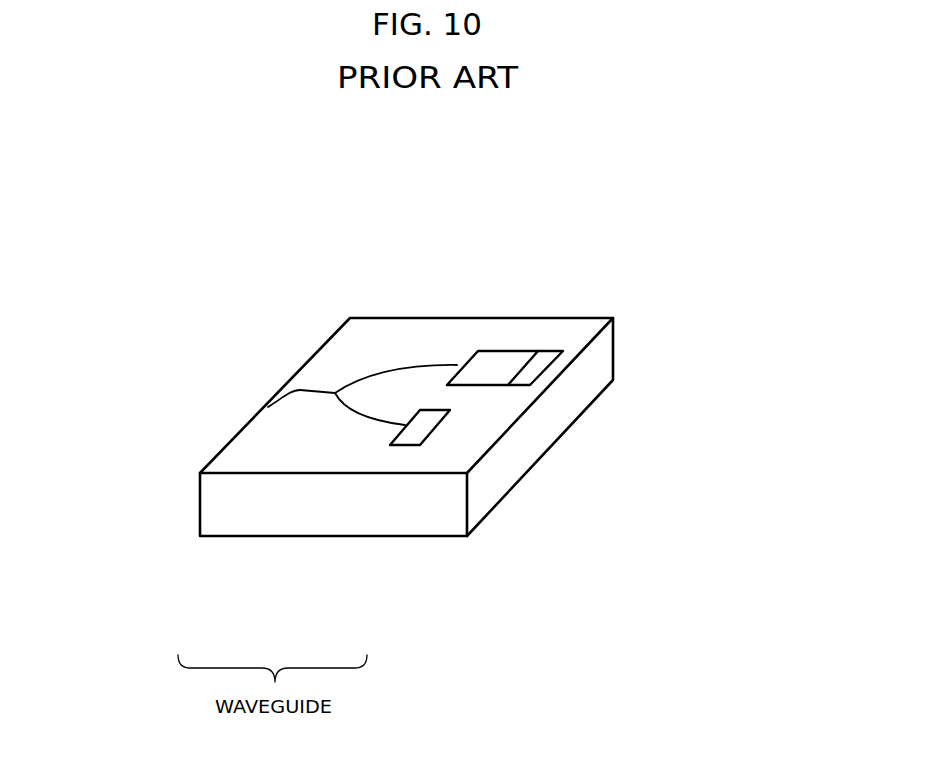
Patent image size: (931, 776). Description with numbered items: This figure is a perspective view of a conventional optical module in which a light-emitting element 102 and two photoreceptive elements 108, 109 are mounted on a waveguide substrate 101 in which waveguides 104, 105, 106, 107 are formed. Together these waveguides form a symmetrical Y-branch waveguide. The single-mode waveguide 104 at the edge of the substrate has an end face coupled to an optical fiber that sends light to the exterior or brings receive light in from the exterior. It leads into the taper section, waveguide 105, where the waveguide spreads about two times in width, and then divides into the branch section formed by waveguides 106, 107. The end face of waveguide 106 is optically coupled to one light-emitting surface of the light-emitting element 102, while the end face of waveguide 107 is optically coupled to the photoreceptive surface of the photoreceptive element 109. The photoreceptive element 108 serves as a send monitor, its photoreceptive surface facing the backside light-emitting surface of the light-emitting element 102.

The waveguide substrate 101 is at (512, 453).
The light-emitting element 102 is at (510, 362).
The waveguide 104 is at (280, 405).
The waveguide 105 is at (335, 395).
The waveguide 106 is at (387, 373).
The waveguide 107 is at (373, 420).
The photoreceptive element 108 is at (543, 365).
The photoreceptive element 109 is at (410, 433).